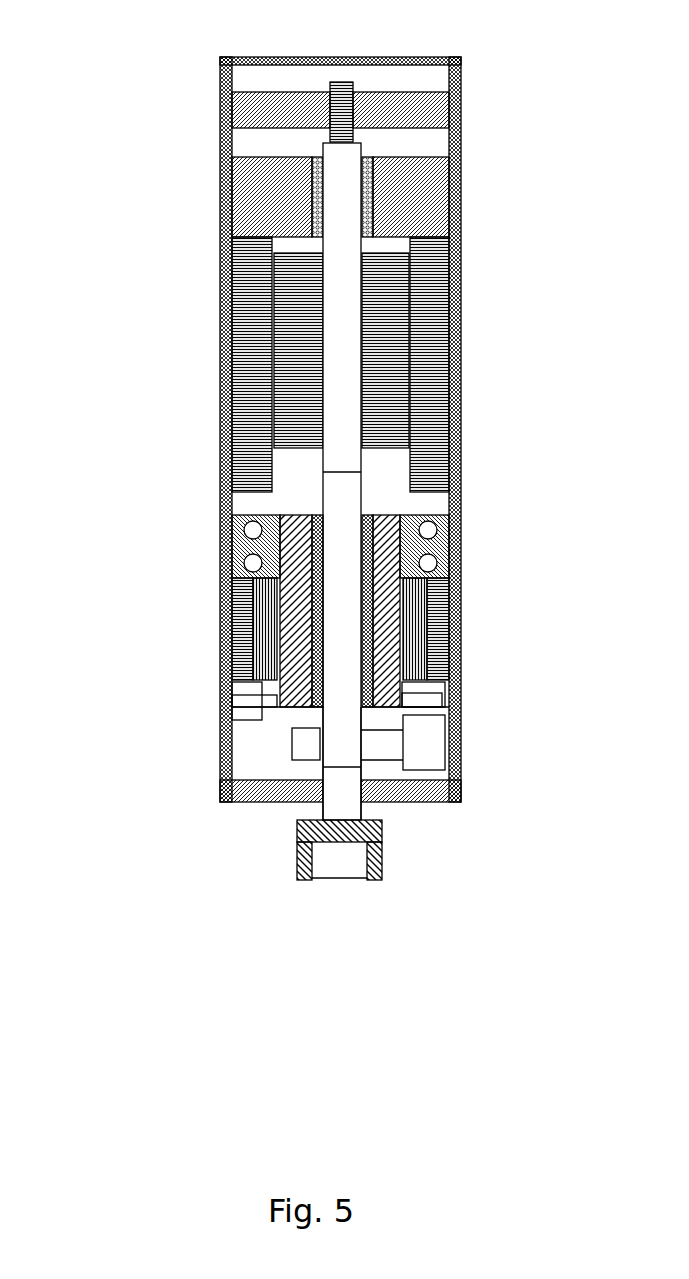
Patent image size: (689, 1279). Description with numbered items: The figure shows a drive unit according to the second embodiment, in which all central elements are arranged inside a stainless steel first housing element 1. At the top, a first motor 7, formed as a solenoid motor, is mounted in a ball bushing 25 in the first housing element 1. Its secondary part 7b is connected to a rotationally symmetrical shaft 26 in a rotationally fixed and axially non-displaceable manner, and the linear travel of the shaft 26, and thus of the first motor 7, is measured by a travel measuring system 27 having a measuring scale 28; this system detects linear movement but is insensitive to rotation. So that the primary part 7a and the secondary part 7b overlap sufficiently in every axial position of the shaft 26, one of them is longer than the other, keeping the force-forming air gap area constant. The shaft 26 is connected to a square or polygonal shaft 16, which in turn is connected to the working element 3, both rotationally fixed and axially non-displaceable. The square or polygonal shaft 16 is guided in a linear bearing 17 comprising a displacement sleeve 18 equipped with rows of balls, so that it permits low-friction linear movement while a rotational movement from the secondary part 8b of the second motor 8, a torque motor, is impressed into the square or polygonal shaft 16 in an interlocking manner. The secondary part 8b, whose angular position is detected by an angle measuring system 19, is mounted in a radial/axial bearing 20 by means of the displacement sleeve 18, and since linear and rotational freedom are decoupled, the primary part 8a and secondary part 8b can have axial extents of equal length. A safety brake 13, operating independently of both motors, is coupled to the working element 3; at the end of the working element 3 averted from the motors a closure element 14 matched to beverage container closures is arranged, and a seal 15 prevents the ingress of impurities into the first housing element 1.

The first housing element 1 is at (390, 61).
The working element 3 is at (338, 779).
The first motor 7 is at (233, 364).
The primary part 7a is at (240, 290).
The secondary part 7b is at (297, 337).
The second motor 8 is at (232, 628).
The primary part 8a is at (232, 660).
The secondary part 8b is at (240, 618).
The safety brake 13 is at (305, 742).
The closure element 14 is at (305, 829).
The seal 15 is at (315, 792).
The square or polygonal shaft 16 is at (340, 523).
The linear bearing 17 is at (300, 612).
The displacement sleeve 18 is at (388, 608).
The angle measuring system 19 is at (250, 699).
The radial/axial bearing 20 is at (233, 555).
The ball bushing 25 is at (316, 200).
The rotationally symmetrical shaft 26 is at (335, 392).
The travel measuring system 27 is at (305, 92).
The measuring scale 28 is at (343, 112).